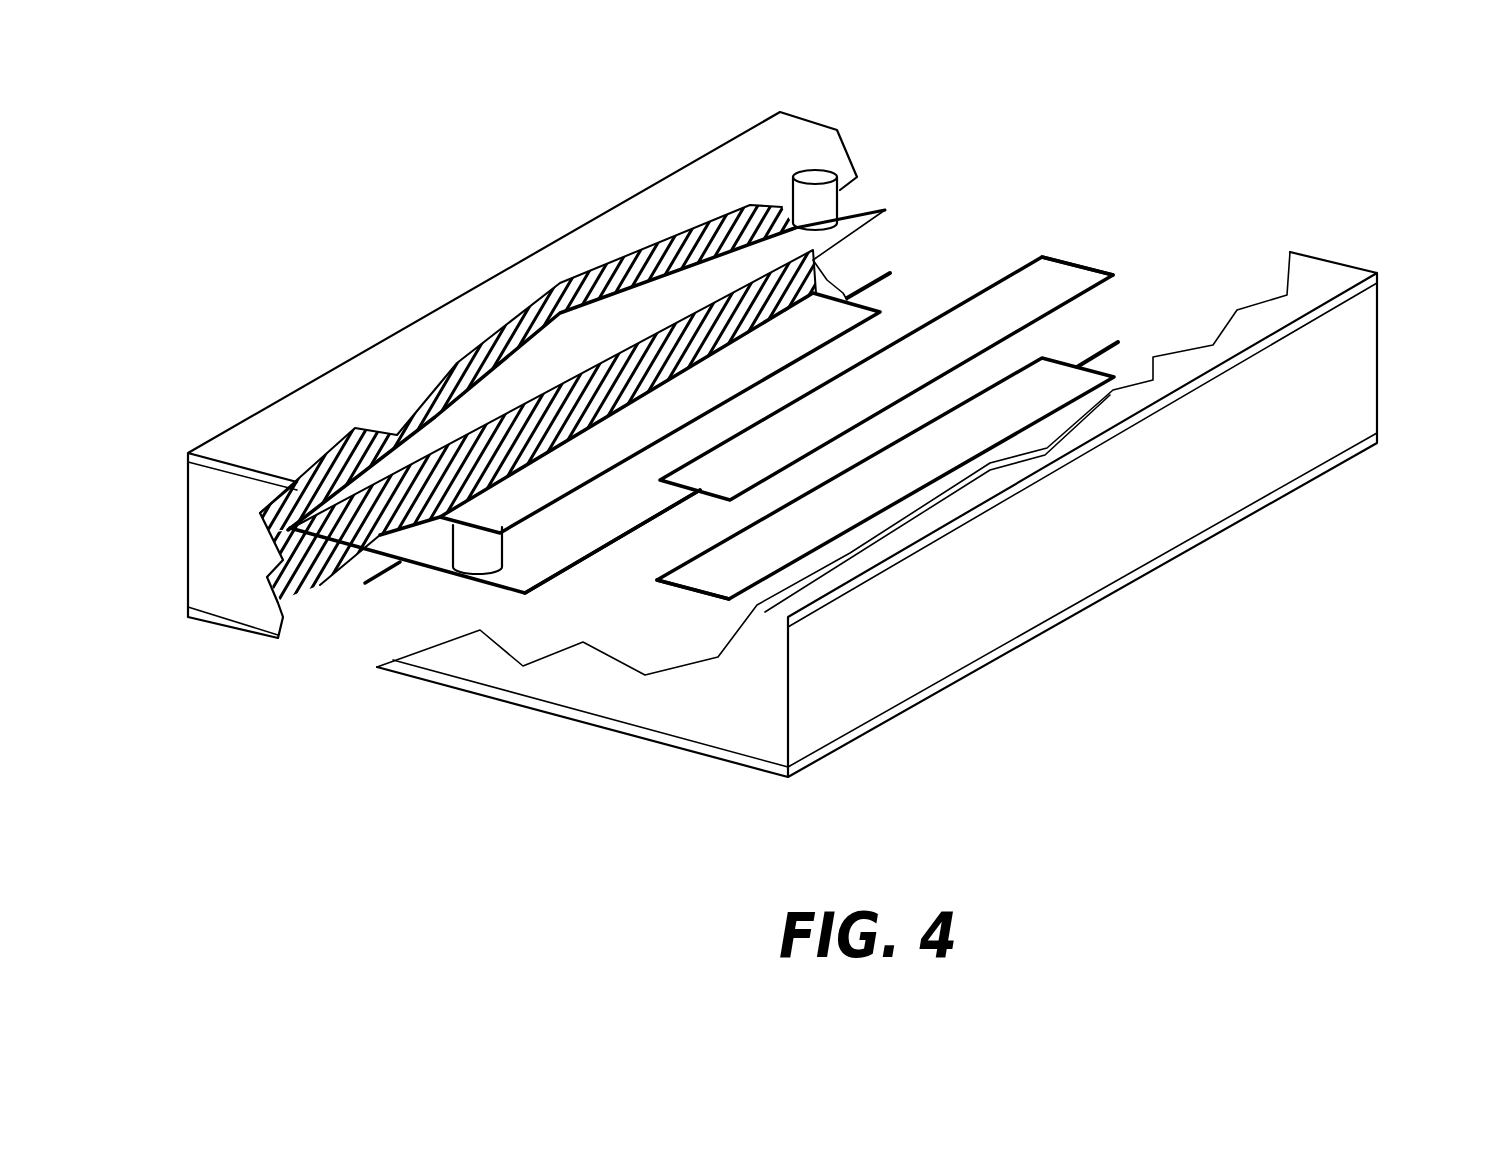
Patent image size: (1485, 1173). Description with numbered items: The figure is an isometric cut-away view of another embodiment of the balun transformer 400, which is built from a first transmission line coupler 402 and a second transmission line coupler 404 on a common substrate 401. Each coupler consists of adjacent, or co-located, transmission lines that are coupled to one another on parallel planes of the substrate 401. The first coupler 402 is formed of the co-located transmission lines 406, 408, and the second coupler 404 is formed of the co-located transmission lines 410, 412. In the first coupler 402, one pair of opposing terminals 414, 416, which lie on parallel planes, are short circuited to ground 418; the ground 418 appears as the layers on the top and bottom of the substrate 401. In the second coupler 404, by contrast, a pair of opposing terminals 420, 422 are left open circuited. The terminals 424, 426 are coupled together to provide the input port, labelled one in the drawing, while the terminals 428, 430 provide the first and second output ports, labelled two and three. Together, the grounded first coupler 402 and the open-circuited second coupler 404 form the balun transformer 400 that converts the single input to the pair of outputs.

The balun transformer 400 is at (1255, 756).
The substrate 401 is at (1383, 360).
The first transmission line coupler 402 is at (943, 287).
The second transmission line coupler 404 is at (1157, 350).
The transmission line 406 is at (567, 357).
The transmission line 408 is at (652, 417).
The transmission line 410 is at (938, 332).
The transmission line 412 is at (1000, 413).
The terminal 414 is at (810, 210).
The terminal 416 is at (475, 543).
The ground 418 is at (210, 461).
The terminal 420 is at (1055, 257).
The terminal 422 is at (693, 592).
The terminal 424 is at (458, 432).
The terminal 426 is at (700, 490).
The terminal 428 is at (845, 298).
The terminal 430 is at (1065, 362).